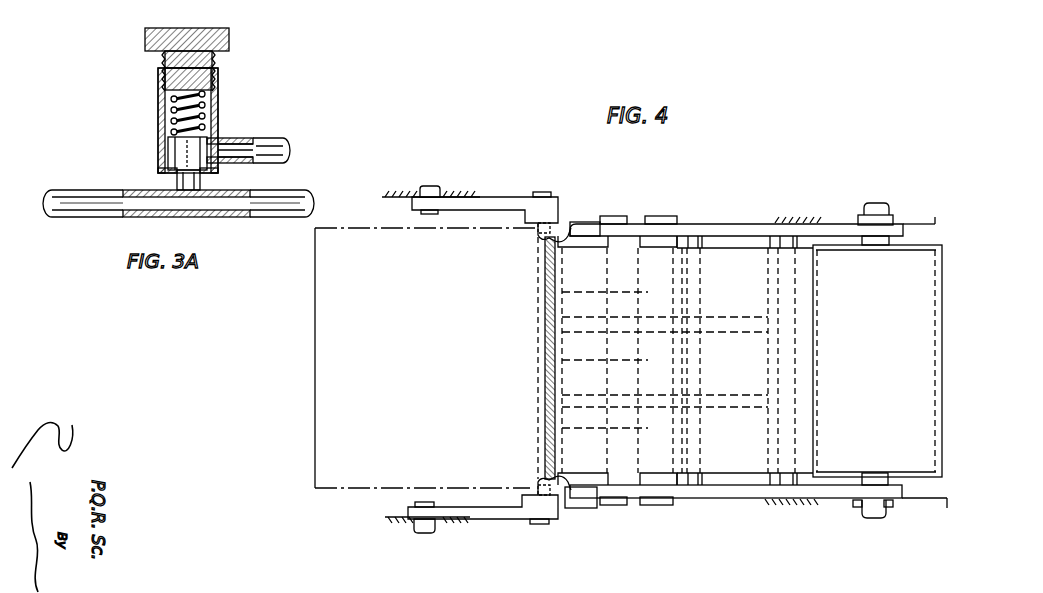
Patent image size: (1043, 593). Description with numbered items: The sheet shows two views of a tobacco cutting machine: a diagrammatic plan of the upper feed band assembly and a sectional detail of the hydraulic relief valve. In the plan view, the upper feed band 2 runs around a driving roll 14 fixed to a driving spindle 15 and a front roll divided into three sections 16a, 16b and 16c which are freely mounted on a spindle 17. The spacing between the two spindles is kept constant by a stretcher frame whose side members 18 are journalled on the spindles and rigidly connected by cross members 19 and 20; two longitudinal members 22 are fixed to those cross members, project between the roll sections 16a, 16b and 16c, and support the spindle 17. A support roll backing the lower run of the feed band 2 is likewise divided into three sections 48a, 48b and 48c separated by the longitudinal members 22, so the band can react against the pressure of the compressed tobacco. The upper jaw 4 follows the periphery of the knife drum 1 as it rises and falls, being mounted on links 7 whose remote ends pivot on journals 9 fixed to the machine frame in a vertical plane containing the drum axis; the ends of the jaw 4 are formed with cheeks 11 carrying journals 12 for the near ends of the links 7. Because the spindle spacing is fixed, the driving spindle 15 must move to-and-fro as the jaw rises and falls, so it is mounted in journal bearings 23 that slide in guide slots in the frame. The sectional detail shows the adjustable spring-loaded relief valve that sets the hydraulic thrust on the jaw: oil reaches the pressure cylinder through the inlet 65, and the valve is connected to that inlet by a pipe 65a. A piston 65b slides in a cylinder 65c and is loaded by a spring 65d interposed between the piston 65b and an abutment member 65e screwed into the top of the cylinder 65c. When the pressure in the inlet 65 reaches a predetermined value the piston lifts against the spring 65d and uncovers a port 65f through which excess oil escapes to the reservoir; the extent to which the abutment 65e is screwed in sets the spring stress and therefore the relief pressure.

In FIG. 3A, the inlet 65 is at (288, 197).
In FIG. 3A, the pipe 65a is at (177, 182).
In FIG. 3A, the piston 65b is at (176, 153).
In FIG. 3A, the cylinder 65c is at (218, 118).
In FIG. 3A, the spring 65d is at (165, 112).
In FIG. 3A, the abutment member 65e is at (229, 42).
In FIG. 3A, the port 65f is at (278, 148).
In FIG. 4, the knife drum 1 is at (315, 322).
In FIG. 4, the upper feed band 2 is at (728, 270).
In FIG. 4, the upper jaw 4 is at (552, 230).
In FIG. 4, the links 7 is at (459, 208).
In FIG. 4, the journals 9 is at (432, 190).
In FIG. 4, the cheeks 11 is at (581, 221).
In FIG. 4, the journals 12 is at (539, 192).
In FIG. 4, the driving roll 14 is at (915, 248).
In FIG. 4, the driving spindle 15 is at (875, 510).
In FIG. 4, the front roll section 16a is at (545, 280).
In FIG. 4, the front roll section 16b is at (545, 347).
In FIG. 4, the front roll section 16c is at (545, 412).
In FIG. 4, the spindle 17 is at (546, 248).
In FIG. 4, the side members 18 is at (709, 230).
In FIG. 4, the cross member 19 is at (786, 480).
In FIG. 4, the cross member 20 is at (690, 482).
In FIG. 4, the longitudinal members 22 is at (727, 326).
In FIG. 4, the journal bearings 23 is at (893, 220).
In FIG. 4, the support roll section 48a is at (545, 298).
In FIG. 4, the support roll section 48b is at (545, 363).
In FIG. 4, the support roll section 48c is at (545, 428).